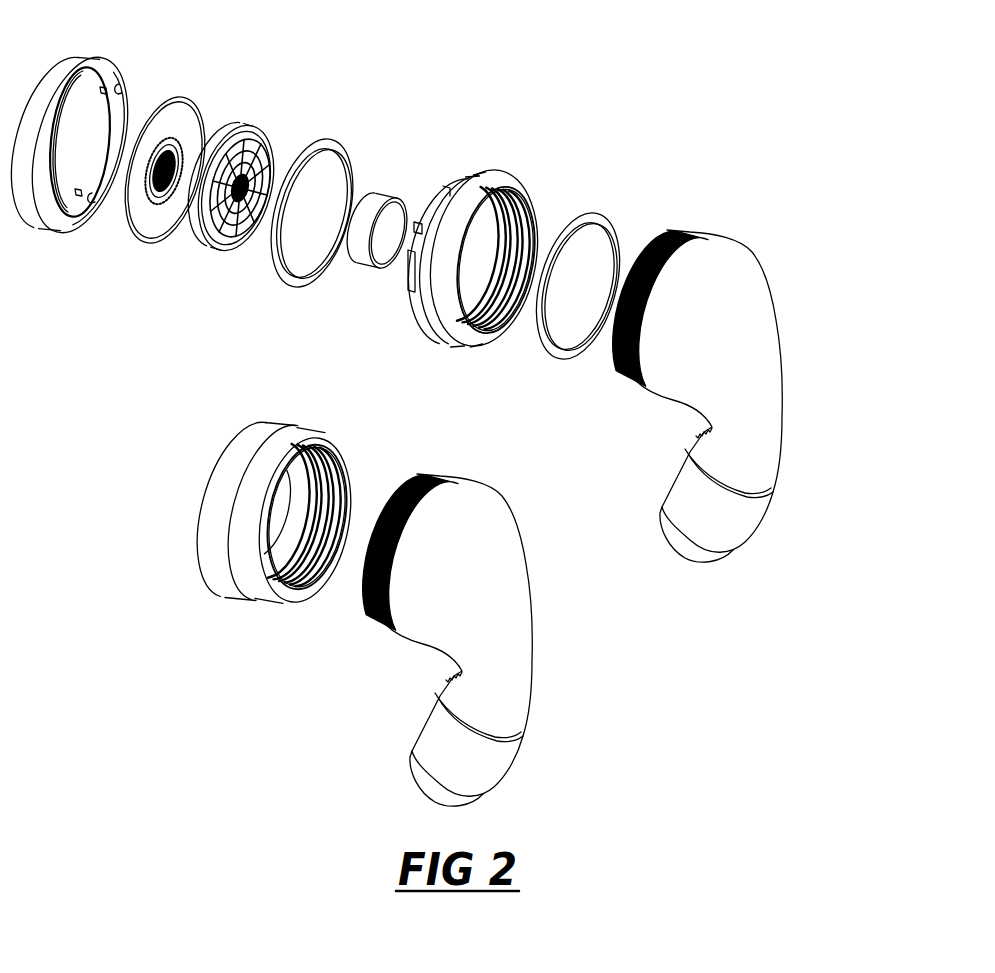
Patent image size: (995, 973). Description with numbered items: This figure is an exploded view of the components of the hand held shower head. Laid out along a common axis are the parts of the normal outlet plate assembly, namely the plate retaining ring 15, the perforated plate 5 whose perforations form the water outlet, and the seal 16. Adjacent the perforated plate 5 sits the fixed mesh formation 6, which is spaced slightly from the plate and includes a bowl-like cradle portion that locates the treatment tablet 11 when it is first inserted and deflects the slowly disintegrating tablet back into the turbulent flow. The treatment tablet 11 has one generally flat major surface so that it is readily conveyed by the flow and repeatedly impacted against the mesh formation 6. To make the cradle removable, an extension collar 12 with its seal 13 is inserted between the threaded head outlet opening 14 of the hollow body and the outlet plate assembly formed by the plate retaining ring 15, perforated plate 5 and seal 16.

The plate retaining ring 15 is at (96, 62).
The perforated plate 5 is at (173, 93).
The mesh formation 6 is at (249, 126).
The seal 16 is at (328, 138).
The treatment tablet 11 is at (393, 196).
The extension collar 12 is at (507, 178).
The seal 13 is at (603, 213).
The threaded head outlet opening 14 is at (687, 230).